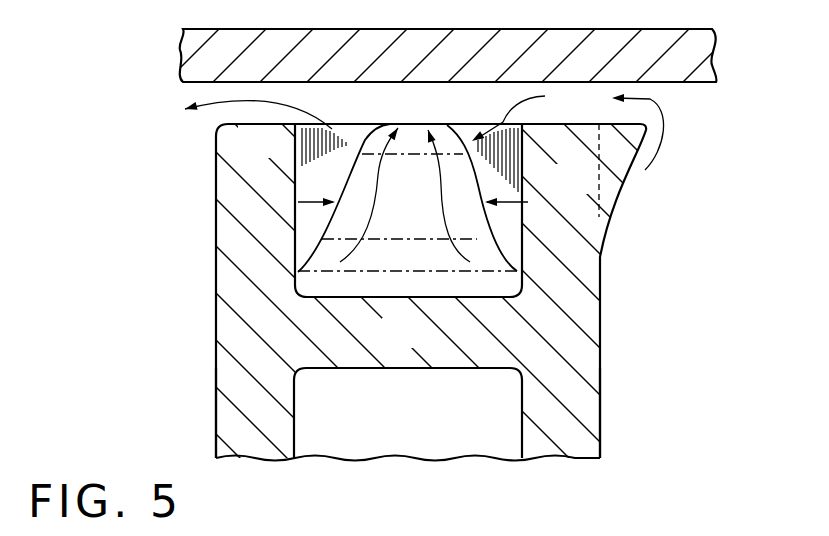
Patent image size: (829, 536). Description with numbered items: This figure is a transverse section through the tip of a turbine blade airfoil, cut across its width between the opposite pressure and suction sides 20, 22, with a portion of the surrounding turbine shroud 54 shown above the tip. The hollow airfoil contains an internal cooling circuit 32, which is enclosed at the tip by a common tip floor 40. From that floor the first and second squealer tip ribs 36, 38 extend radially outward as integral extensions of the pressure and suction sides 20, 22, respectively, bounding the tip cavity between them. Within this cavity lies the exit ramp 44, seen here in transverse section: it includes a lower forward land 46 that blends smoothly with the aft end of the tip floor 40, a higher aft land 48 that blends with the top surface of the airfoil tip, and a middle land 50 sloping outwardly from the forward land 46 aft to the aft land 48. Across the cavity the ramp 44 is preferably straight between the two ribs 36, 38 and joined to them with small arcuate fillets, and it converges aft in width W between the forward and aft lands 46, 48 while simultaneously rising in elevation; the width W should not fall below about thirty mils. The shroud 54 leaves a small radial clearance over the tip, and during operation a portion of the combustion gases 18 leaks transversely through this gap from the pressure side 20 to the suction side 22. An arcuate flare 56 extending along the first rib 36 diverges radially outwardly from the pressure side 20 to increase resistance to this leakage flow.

The combustion gases 18 is at (640, 278).
The airfoil pressure side 20 is at (600, 410).
The airfoil suction side 22 is at (216, 414).
The internal cooling circuit 32 is at (432, 436).
The first squealer tip rib 36 is at (586, 190).
The second squealer tip rib 38 is at (275, 154).
The tip floor 40 is at (419, 345).
The exit ramp 44 is at (345, 176).
The forward land 46 is at (424, 264).
The aft land 48 is at (412, 139).
The middle land 50 is at (427, 207).
The turbine shroud 54 is at (718, 66).
The arcuate flare 56 is at (622, 166).
The width of the exit ramp W is at (306, 205).